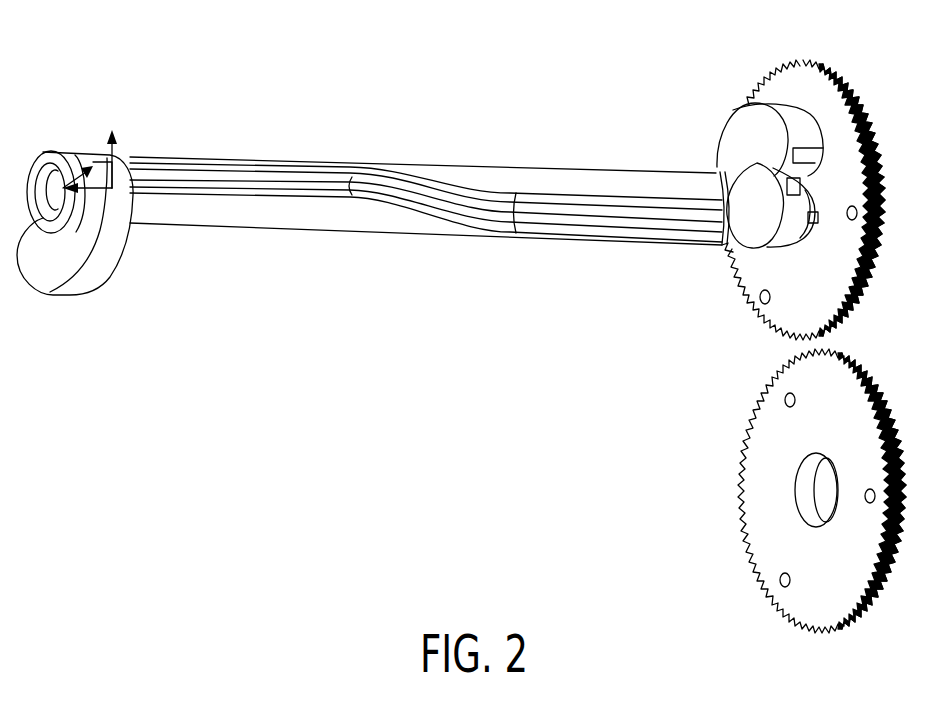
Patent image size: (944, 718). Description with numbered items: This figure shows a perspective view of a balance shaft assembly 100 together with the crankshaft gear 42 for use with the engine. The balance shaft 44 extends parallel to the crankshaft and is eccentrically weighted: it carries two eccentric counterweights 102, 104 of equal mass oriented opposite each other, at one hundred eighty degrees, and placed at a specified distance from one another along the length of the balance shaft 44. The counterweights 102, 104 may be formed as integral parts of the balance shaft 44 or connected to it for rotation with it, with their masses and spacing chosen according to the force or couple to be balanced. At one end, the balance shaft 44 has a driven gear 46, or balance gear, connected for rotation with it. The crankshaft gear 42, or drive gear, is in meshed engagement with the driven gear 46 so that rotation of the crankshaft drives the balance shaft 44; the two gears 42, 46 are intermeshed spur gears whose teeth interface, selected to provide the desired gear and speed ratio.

The balance shaft assembly 100 is at (264, 101).
The eccentric counterweight 104 is at (92, 275).
The balance shaft 44 is at (455, 172).
The eccentric counterweight 102 is at (745, 127).
The driven gear 46 is at (850, 87).
The crankshaft gear 42 is at (800, 605).